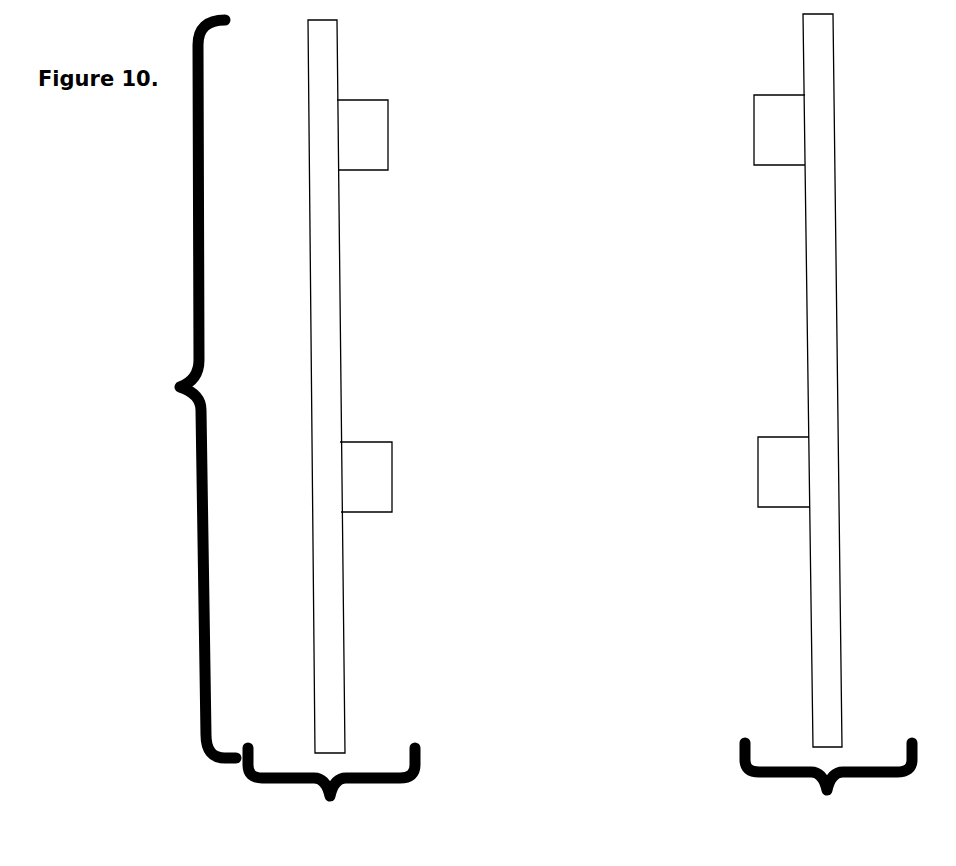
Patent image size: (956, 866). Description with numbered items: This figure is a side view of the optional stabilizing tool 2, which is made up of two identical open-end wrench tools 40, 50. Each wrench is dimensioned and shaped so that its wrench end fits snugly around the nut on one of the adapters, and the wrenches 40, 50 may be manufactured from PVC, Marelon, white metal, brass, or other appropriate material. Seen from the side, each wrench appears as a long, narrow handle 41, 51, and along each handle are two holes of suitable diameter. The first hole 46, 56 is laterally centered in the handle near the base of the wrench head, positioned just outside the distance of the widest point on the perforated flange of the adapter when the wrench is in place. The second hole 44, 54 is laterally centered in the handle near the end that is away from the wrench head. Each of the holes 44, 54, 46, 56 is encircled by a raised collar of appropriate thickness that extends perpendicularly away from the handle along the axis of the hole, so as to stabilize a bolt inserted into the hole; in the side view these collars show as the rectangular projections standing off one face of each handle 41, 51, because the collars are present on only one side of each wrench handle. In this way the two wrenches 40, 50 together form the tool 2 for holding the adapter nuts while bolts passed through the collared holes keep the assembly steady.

The tool 2 is at (193, 389).
The open-end wrench tool 40 is at (350, 425).
The handle 41 is at (338, 318).
The second hole 44 is at (388, 120).
The first hole 46 is at (392, 468).
The open-end wrench tool 50 is at (804, 419).
The handle 51 is at (808, 313).
The second hole 54 is at (754, 118).
The first hole 56 is at (758, 462).